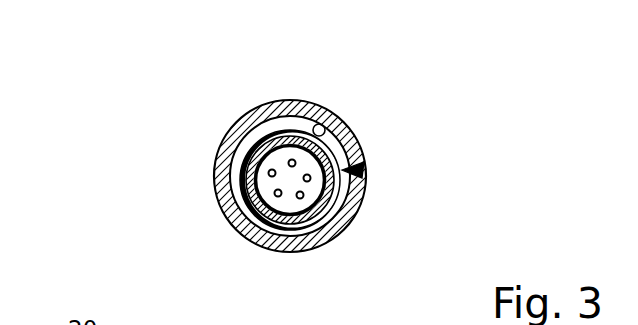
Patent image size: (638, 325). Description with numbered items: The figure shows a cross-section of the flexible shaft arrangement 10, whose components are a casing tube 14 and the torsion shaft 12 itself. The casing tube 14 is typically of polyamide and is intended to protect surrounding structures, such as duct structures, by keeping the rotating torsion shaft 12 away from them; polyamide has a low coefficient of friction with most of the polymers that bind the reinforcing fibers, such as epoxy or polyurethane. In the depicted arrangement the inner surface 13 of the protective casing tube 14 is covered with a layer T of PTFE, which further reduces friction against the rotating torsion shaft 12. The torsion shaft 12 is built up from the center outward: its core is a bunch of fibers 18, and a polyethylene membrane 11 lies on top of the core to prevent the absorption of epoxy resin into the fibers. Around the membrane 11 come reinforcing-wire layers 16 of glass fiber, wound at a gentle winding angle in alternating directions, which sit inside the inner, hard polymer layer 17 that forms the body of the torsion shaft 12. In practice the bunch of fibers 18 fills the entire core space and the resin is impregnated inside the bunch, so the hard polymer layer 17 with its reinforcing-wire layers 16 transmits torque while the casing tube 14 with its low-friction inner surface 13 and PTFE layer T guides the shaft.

The flexible shaft arrangement 10 is at (259, 159).
The polyethylene membrane 11 is at (276, 168).
The torsion shaft 12 is at (364, 170).
The inner surface 13 is at (335, 142).
The casing tube 14 is at (315, 250).
The reinforcing-wire layers 16 is at (333, 195).
The inner hard polymer layer 17 is at (283, 136).
The bunch of fibers 18 is at (260, 142).
The layer of PTFE T is at (243, 147).